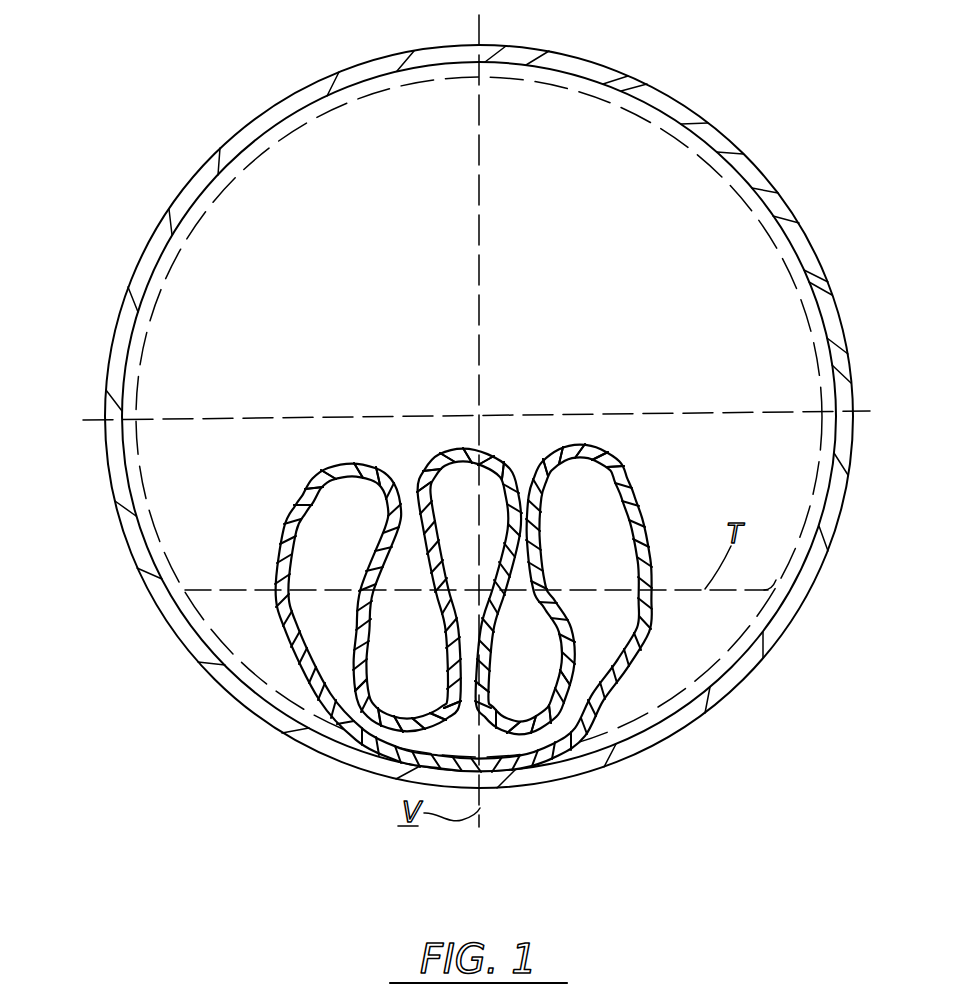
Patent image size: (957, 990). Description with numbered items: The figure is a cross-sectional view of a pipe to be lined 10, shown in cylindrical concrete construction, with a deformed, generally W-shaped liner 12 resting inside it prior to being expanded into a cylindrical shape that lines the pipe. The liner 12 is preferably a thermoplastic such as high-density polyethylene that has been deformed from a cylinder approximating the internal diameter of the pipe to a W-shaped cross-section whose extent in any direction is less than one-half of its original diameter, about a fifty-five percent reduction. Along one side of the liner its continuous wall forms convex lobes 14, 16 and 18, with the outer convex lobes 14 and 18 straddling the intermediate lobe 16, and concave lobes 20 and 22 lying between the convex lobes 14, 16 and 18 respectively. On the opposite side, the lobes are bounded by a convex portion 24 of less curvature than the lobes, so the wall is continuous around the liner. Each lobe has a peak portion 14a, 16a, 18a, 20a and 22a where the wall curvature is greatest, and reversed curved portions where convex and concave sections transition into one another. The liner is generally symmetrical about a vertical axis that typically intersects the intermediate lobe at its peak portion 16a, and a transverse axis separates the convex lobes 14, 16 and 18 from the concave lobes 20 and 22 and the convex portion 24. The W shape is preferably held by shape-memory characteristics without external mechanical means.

The pipe to be lined 10 is at (479, 414).
The W-shaped liner 12 is at (795, 292).
The convex lobe 14 is at (297, 492).
The peak portion of convex lobe 14 14a is at (335, 464).
The intermediate convex lobe 16 is at (496, 458).
The peak portion of intermediate convex lobe 16 16a is at (437, 456).
The convex lobe 18 is at (648, 494).
The peak portion of convex lobe 18 18a is at (589, 448).
The concave lobe 20 is at (353, 667).
The peak portion of concave lobe 20 20a is at (403, 715).
The concave lobe 22 is at (566, 649).
The peak portion of concave lobe 22 22a is at (513, 716).
The convex portion 24 is at (584, 731).